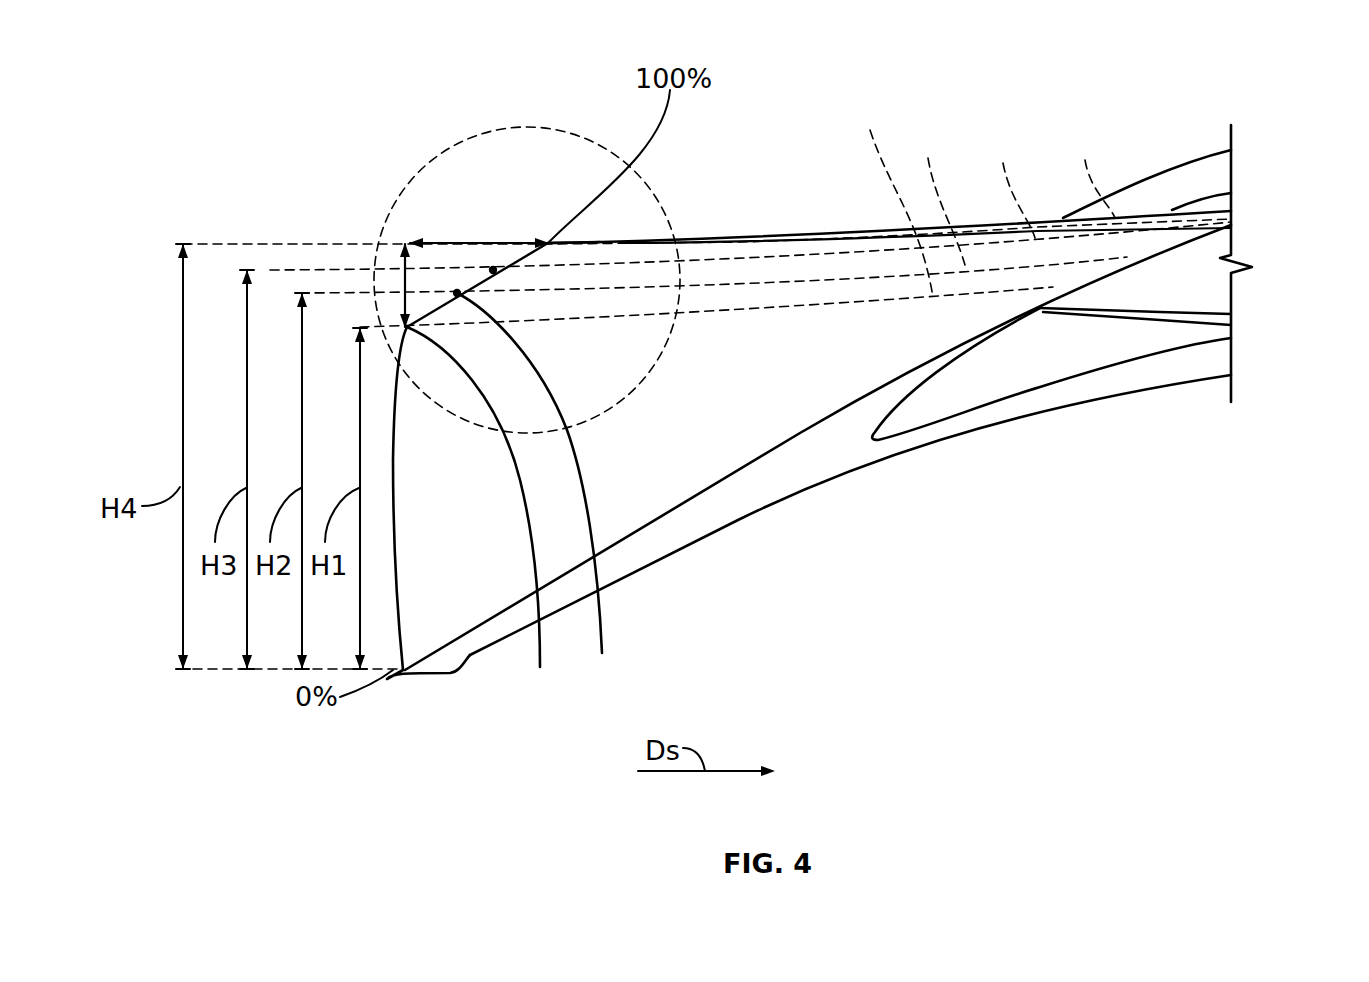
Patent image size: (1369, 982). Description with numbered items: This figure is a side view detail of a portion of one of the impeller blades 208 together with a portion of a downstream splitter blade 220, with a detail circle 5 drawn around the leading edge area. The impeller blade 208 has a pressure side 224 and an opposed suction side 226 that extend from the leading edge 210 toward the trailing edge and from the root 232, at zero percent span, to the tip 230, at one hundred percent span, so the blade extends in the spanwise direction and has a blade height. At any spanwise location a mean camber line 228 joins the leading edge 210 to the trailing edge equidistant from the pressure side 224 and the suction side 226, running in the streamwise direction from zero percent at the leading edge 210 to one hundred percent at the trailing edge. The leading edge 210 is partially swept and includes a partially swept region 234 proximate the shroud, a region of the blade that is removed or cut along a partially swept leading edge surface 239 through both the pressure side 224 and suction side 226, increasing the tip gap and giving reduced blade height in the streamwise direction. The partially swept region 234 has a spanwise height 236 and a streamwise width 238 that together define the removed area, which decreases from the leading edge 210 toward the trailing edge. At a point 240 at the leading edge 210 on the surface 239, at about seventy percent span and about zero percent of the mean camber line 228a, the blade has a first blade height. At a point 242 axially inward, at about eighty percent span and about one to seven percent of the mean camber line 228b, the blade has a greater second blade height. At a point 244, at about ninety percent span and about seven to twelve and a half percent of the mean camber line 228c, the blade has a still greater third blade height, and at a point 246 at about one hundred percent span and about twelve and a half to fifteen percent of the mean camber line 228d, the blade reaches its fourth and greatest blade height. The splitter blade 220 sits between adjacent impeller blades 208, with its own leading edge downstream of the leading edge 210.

The detail view circle (FIG. 5) 5 is at (485, 128).
The impeller blade 208 is at (982, 191).
The leading edge 210 is at (346, 398).
The splitter blade 220 is at (1211, 306).
The pressure side 224 is at (1207, 207).
The suction side 226 is at (1231, 218).
The mean camber line 228 is at (854, 238).
The mean camber line 228a is at (885, 199).
The mean camber line 228b is at (932, 197).
The mean camber line 228c is at (1011, 186).
The mean camber line 228d is at (1092, 174).
The tip 230 is at (722, 238).
The root 232 is at (678, 510).
The partially swept region 234 is at (467, 220).
The spanwise height 236 is at (403, 292).
The streamwise width 238 is at (493, 268).
The partially swept leading edge surface 239 is at (452, 278).
The point 240 is at (488, 516).
The point 242 is at (544, 489).
The point 244 is at (548, 242).
The point 246 is at (549, 243).